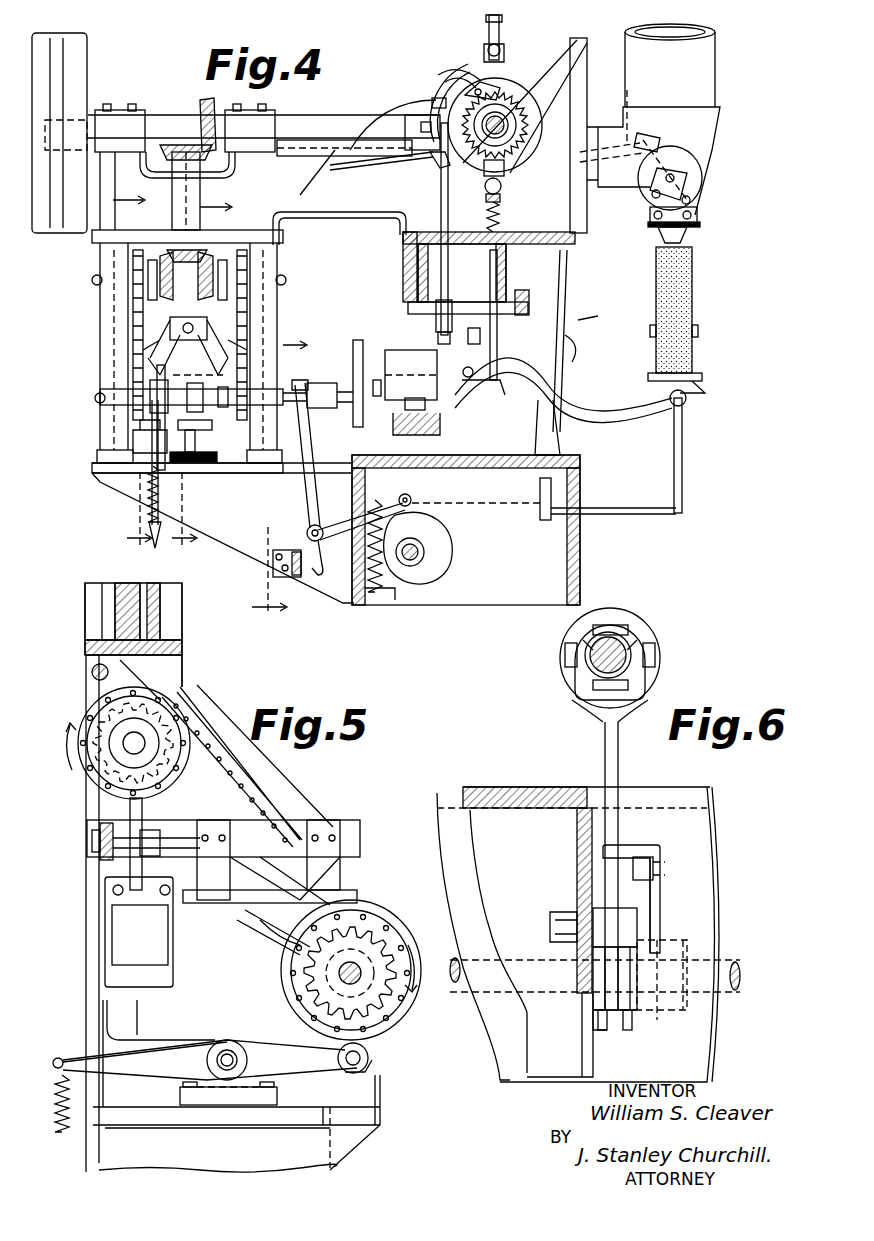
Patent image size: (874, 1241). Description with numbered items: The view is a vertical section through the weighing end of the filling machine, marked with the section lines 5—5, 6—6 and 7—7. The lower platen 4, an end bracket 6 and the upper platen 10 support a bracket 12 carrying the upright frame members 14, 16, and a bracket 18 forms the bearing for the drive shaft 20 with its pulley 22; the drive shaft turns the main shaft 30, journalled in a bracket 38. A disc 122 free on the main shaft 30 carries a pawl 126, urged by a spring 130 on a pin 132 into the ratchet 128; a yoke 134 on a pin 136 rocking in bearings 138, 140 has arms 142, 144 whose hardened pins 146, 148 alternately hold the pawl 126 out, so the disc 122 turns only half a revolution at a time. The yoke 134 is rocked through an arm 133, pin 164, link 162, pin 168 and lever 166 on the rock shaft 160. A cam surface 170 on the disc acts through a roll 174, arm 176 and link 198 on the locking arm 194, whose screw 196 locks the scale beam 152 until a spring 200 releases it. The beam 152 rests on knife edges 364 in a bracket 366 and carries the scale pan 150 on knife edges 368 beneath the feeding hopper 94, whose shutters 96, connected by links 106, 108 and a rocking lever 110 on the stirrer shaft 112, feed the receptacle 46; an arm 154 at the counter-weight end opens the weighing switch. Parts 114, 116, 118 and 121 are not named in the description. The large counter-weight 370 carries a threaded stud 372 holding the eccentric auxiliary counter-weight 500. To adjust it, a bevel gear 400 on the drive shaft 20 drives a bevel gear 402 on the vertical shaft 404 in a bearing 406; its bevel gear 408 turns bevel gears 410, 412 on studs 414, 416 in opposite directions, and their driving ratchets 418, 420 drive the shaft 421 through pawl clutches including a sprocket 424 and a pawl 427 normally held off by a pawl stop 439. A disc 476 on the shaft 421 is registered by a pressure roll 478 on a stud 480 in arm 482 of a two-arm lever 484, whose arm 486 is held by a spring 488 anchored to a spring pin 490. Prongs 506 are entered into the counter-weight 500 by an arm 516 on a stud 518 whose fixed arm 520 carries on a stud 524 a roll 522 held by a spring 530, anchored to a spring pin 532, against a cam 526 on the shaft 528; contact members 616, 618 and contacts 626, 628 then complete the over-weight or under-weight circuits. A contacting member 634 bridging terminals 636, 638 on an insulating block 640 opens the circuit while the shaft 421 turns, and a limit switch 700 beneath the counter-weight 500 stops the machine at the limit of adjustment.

In FIG. 4, the cabinet 4 is at (582, 572).
In FIG. 6, the cabinet 4 is at (705, 792).
In FIG. 4, the section line 5- 5 is at (132, 372).
In FIG. 4, the section line 6- 6 is at (435, 469).
In FIG. 4, the section line 7- 7 is at (202, 377).
In FIG. 4, the bed plate 10 is at (560, 250).
In FIG. 4, the frame 12 is at (255, 560).
In FIG. 5, the frame 12 is at (355, 1148).
In FIG. 6, the frame 12 is at (462, 790).
In FIG. 4, the housing wall / belt 14 is at (280, 306).
In FIG. 5, the housing wall / belt 14 is at (245, 770).
In FIG. 4, the gear housing 16 is at (100, 330).
In FIG. 4, the column 18 is at (296, 148).
In FIG. 5, the column 18 is at (133, 619).
In FIG. 4, the rail 20 is at (312, 118).
In FIG. 4, the disc 22 is at (88, 54).
In FIG. 4, the ratchet wheel 30 is at (560, 40).
In FIG. 4, the support 38 is at (405, 244).
In FIG. 4, the chute 46 is at (695, 292).
In FIG. 4, the hopper body 94 is at (718, 114).
In FIG. 4, the nozzle 96 is at (690, 236).
In FIG. 4, the pin 106 is at (700, 193).
In FIG. 4, the pin 108 is at (695, 203).
In FIG. 4, the valve disc 110 is at (695, 150).
In FIG. 4, the valve plate 112 is at (690, 173).
In FIG. 4, the hopper 114 is at (670, 83).
In FIG. 4, the rod 116 is at (488, 28).
In FIG. 4, the cap 118 is at (492, 44).
In FIG. 4, the plate 121 is at (572, 40).
In FIG. 4, the hub 122 is at (505, 115).
In FIG. 4, the clevis 126 is at (503, 50).
In FIG. 4, the gear 128 is at (520, 112).
In FIG. 4, the pawl arm 130 is at (440, 74).
In FIG. 4, the pawl arm 132 is at (446, 84).
In FIG. 4, the link 133 is at (433, 160).
In FIG. 4, the block 134 is at (432, 102).
In FIG. 4, the rod 136 is at (325, 165).
In FIG. 4, the guide 138 is at (372, 100).
In FIG. 4, the clamp 140 is at (405, 128).
In FIG. 4, the arc guide 142 is at (455, 70).
In FIG. 4, the rod 144 is at (441, 193).
In FIG. 4, the pawl 146 is at (498, 85).
In FIG. 4, the clevis 148 is at (507, 170).
In FIG. 4, the rod 150 is at (706, 392).
In FIG. 4, the arm 152 is at (572, 395).
In FIG. 4, the bracket 154 is at (412, 432).
In FIG. 4, the rod 160 is at (580, 310).
In FIG. 4, the lever 162 is at (407, 222).
In FIG. 4, the rod 164 is at (400, 160).
In FIG. 4, the coupling 166 is at (450, 302).
In FIG. 4, the bolt 168 is at (468, 336).
In FIG. 4, the bracket 170 is at (540, 135).
In FIG. 4, the roller 174 is at (510, 196).
In FIG. 4, the spring 176 is at (507, 212).
In FIG. 4, the link 194 is at (498, 366).
In FIG. 4, the rod 196 is at (498, 345).
In FIG. 4, the bar 198 is at (530, 300).
In FIG. 4, the block 200 is at (477, 273).
In FIG. 4, the hook 364 is at (585, 337).
In FIG. 4, the link 366 is at (565, 437).
In FIG. 4, the pivot 368 is at (688, 404).
In FIG. 4, the bolt block 370 is at (428, 397).
In FIG. 4, the disc 372 is at (364, 380).
In FIG. 4, the bevel pinion 400 is at (204, 105).
In FIG. 4, the bevel gear 402 is at (163, 142).
In FIG. 4, the vertical shaft 404 is at (185, 212).
In FIG. 4, the pipe 406 is at (234, 170).
In FIG. 4, the top plate 408 is at (218, 222).
In FIG. 4, the gear 410 is at (215, 248).
In FIG. 4, the chain 412 is at (130, 262).
In FIG. 4, the bolt 414 is at (286, 280).
In FIG. 4, the bolt 416 is at (95, 284).
In FIG. 4, the bevel gear 418 is at (130, 276).
In FIG. 4, the chain 420 is at (250, 262).
In FIG. 4, the crank 421 is at (218, 412).
In FIG. 5, the crank 421 is at (362, 980).
In FIG. 5, the gear 424 is at (92, 772).
In FIG. 5, the shaft 427 is at (150, 800).
In FIG. 5, the nut 439 is at (100, 830).
In FIG. 5, the gear 476 is at (408, 1030).
In FIG. 5, the roller 478 is at (372, 1056).
In FIG. 5, the arm 480 is at (362, 1068).
In FIG. 5, the lever 482 is at (288, 1042).
In FIG. 5, the pivot 484 is at (220, 1040).
In FIG. 5, the lever arm 486 is at (125, 1052).
In FIG. 4, the spring 488 is at (148, 500).
In FIG. 5, the spring 488 is at (60, 1132).
In FIG. 4, the punch 490 is at (148, 533).
In FIG. 4, the motor 500 is at (350, 372).
In FIG. 4, the cylinder 506 is at (336, 385).
In FIG. 4, the lever rod 516 is at (305, 480).
In FIG. 6, the lever rod 516 is at (604, 765).
In FIG. 4, the pivot 518 is at (306, 530).
In FIG. 4, the link 520 is at (413, 496).
In FIG. 6, the link 520 is at (630, 900).
In FIG. 4, the rod 522 is at (450, 503).
In FIG. 6, the rod 522 is at (655, 846).
In FIG. 4, the block 524 is at (440, 508).
In FIG. 6, the block 524 is at (652, 868).
In FIG. 4, the cam 526 is at (448, 540).
In FIG. 6, the cam 526 is at (655, 905).
In FIG. 4, the shaft 528 is at (425, 558).
In FIG. 6, the shaft 528 is at (728, 958).
In FIG. 4, the spring 530 is at (385, 585).
In FIG. 4, the bracket 532 is at (373, 605).
In FIG. 4, the hook 616 is at (322, 578).
In FIG. 6, the hook 616 is at (628, 1032).
In FIG. 4, the bracket 618 is at (290, 578).
In FIG. 6, the bracket 618 is at (630, 1020).
In FIG. 6, the stud 626 is at (600, 1030).
In FIG. 6, the stud 628 is at (596, 1022).
In FIG. 4, the rod 634 is at (185, 440).
In FIG. 4, the plate 636 is at (178, 425).
In FIG. 4, the bracket 638 is at (148, 420).
In FIG. 4, the block 640 is at (200, 463).
In FIG. 4, the pivot 700 is at (390, 491).